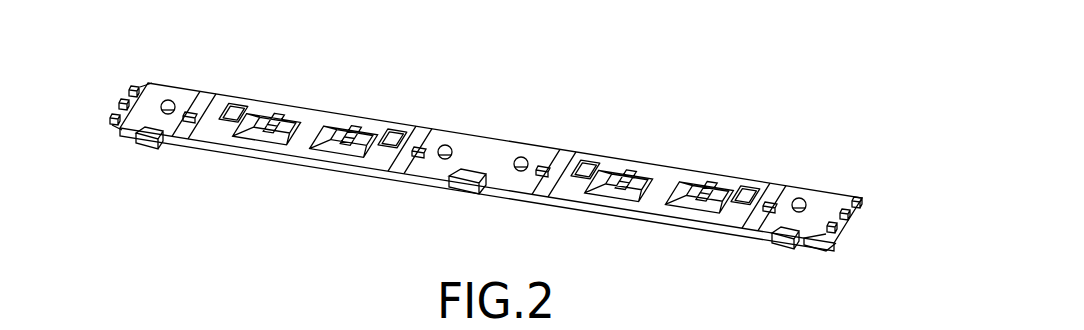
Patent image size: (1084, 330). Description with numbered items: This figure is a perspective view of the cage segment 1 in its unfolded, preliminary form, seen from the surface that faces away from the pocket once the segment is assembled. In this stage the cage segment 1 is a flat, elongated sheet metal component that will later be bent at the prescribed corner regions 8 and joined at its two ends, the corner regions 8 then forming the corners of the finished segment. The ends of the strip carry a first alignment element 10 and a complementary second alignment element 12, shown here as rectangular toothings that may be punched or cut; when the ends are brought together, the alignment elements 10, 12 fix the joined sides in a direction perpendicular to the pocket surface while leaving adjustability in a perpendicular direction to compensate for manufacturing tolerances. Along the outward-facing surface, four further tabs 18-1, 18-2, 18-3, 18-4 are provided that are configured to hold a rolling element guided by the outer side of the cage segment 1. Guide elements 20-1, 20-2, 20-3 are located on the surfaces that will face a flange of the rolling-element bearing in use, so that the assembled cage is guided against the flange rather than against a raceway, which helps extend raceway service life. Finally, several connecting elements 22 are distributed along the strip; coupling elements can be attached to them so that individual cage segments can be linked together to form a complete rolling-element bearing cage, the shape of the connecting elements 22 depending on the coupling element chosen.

The cage segment 1 is at (688, 96).
The corner regions 8 is at (213, 92).
The first alignment element 10 is at (876, 210).
The second alignment element 12 is at (106, 88).
The further tab 18-1 is at (235, 109).
The further tab 18-2 is at (392, 133).
The further tab 18-3 is at (581, 160).
The further tab 18-4 is at (748, 186).
The guide element 20-1 is at (464, 195).
The guide element 20-2 is at (785, 250).
The guide element 20-3 is at (146, 145).
The connecting elements 22 is at (168, 100).